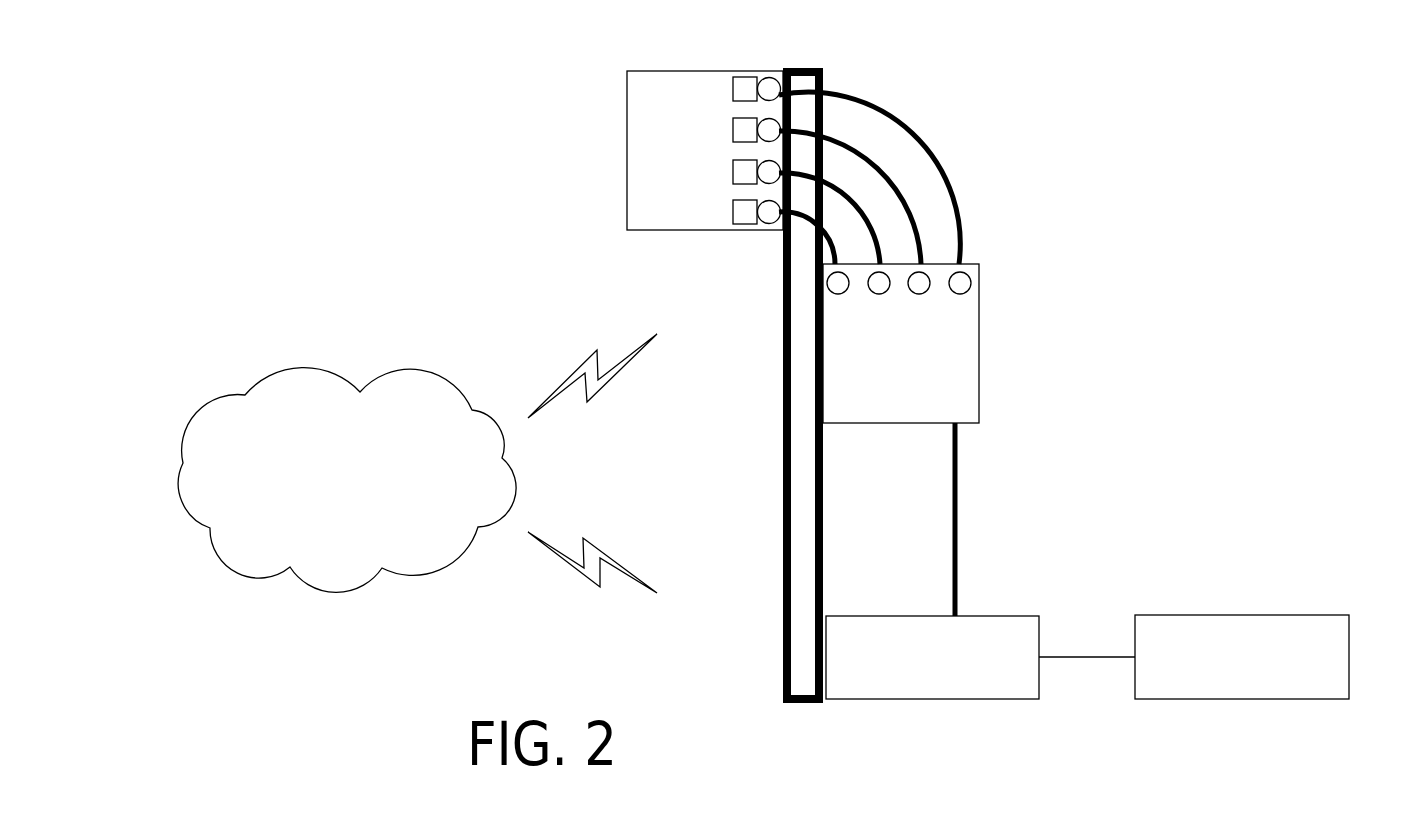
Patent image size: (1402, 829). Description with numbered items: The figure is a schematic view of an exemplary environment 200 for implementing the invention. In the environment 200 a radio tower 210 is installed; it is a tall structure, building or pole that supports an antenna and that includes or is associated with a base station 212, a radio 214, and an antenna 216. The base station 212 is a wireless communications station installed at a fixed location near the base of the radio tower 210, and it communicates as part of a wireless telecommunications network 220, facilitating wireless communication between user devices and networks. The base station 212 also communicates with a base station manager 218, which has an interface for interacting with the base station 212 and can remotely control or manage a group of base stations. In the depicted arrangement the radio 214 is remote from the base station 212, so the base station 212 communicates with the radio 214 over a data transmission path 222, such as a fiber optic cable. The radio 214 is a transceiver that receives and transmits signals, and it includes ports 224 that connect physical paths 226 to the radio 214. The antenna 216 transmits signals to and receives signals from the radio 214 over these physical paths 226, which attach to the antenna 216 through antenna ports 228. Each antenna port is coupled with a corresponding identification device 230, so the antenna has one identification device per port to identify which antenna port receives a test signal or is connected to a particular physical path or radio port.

The environment 200 is at (288, 142).
The radio tower 210 is at (824, 518).
The base station 212 is at (984, 616).
The radio 214 is at (980, 353).
The antenna 216 is at (627, 144).
The base station manager 218 is at (1294, 615).
The wireless telecommunications network 220 is at (296, 367).
The data transmission path 222 is at (957, 518).
The ports 224 is at (993, 270).
The physical paths 226 is at (868, 47).
The ports 228 is at (758, 56).
The identification devices 230 is at (757, 56).